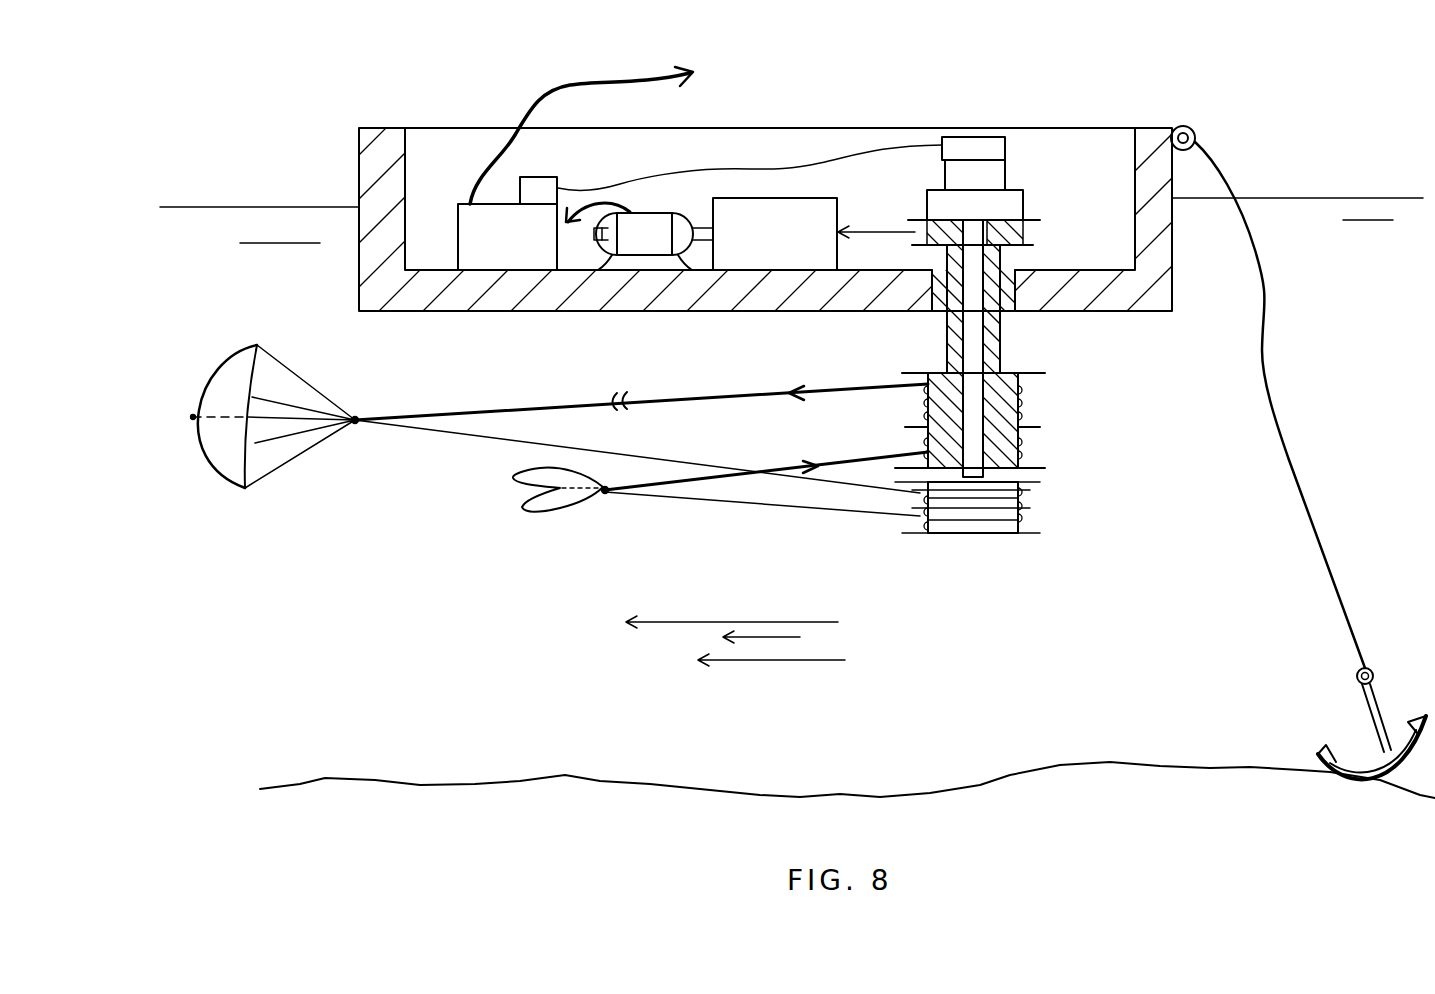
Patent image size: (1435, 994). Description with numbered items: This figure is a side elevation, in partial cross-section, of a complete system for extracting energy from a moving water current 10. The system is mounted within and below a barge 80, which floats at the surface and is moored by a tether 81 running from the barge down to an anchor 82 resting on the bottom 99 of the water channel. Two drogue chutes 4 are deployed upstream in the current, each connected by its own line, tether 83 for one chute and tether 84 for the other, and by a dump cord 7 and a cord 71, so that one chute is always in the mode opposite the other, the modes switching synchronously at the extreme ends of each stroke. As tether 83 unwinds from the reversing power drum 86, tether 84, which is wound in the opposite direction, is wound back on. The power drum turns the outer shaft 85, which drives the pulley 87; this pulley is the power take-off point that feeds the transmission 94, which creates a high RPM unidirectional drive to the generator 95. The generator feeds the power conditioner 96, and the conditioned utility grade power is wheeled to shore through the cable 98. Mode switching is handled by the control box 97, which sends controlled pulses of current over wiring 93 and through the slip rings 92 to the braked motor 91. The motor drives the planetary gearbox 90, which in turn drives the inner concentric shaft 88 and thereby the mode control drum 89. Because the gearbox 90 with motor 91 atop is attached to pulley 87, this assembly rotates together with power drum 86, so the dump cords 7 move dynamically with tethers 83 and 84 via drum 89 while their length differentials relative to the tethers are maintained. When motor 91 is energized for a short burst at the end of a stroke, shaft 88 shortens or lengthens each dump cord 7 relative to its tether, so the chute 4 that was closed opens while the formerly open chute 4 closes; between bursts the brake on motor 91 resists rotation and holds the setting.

The drogue chute 4 is at (213, 460).
The dump cord 7 is at (704, 503).
The water current 10 is at (735, 641).
The tether line 71 is at (637, 456).
The barge 80 is at (1147, 298).
The anchor line 81 is at (1280, 395).
The anchor 82 is at (1348, 680).
The tether 83 is at (690, 385).
The tether 84 is at (767, 466).
The outer shaft 85 is at (1005, 337).
The reversing power drum 86 is at (1052, 421).
The pulley 87 is at (1032, 233).
The inner concentric shaft 88 is at (948, 335).
The mode control drum 89 is at (1045, 506).
The planetary gearbox 90 is at (1012, 205).
The braked motor 91 is at (997, 178).
The slip rings 92 is at (1020, 140).
The electrical wire 93 is at (868, 150).
The transmission 94 is at (830, 216).
The generator 95 is at (652, 218).
The power conditioner 96 is at (463, 222).
The control box 97 is at (540, 185).
The cable 98 is at (615, 73).
The bottom 99 is at (1003, 762).